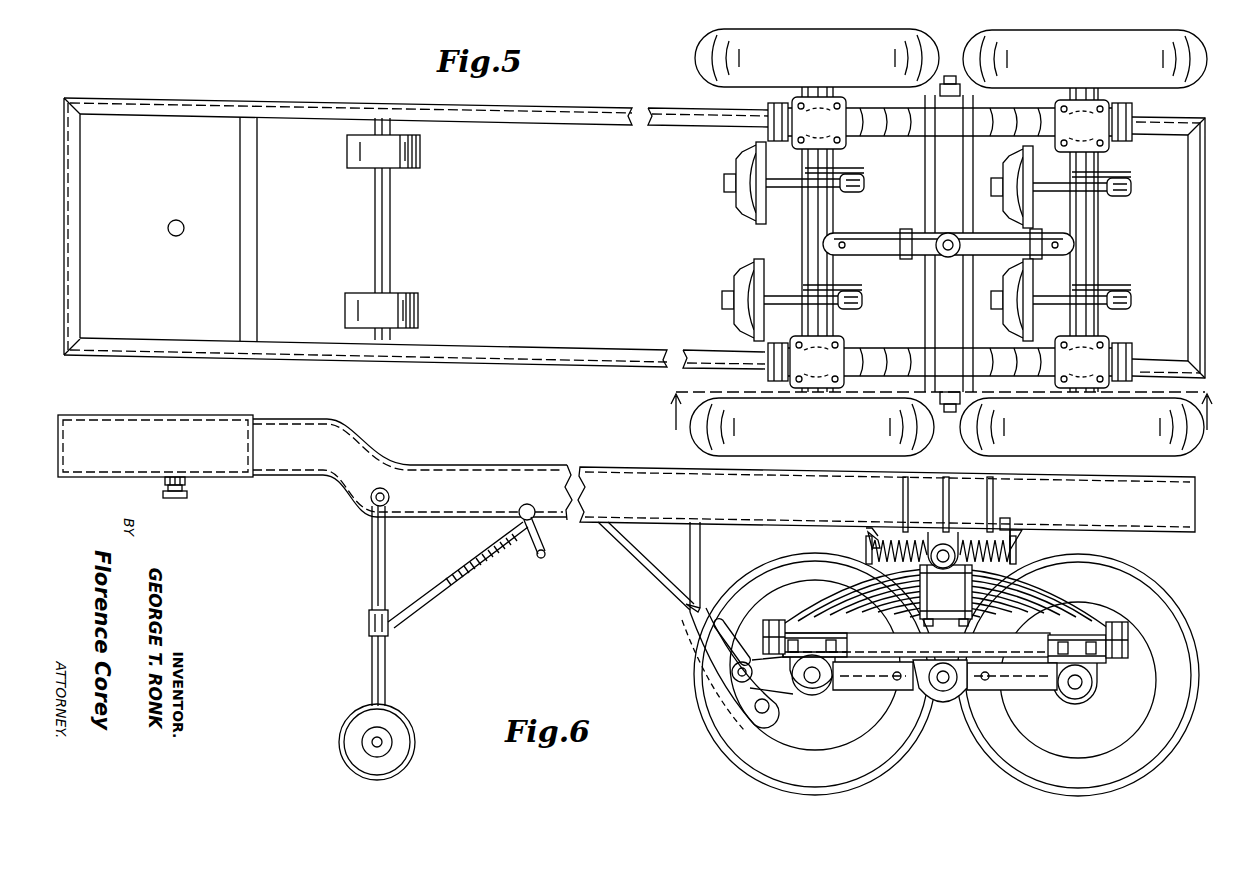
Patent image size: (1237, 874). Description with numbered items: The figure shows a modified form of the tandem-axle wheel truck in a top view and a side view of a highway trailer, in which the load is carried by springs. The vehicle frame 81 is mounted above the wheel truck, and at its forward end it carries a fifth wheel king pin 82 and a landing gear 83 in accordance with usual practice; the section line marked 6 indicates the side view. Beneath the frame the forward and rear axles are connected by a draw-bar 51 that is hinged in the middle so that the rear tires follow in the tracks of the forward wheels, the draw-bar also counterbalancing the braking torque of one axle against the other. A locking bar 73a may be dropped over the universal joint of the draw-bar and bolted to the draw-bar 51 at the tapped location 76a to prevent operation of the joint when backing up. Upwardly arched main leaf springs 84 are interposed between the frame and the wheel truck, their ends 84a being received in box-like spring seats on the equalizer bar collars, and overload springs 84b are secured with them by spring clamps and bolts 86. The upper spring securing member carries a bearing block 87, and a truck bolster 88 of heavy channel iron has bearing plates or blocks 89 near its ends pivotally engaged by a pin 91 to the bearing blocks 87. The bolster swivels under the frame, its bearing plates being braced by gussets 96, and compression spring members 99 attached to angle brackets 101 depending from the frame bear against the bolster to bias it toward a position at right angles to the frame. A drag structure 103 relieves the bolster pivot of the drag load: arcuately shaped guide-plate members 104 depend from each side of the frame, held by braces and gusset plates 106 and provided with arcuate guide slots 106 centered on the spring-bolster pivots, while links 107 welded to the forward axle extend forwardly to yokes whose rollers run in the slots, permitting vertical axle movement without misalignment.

In FIG. 5, the section line 6- 6 is at (938, 418).
In FIG. 5, the draw-bar 51 is at (886, 236).
In FIG. 5, the locking bar 73a is at (940, 262).
In FIG. 5, the tapped hole in draw-bar 76a is at (884, 264).
In FIG. 5, the vehicle frame 81 is at (529, 351).
In FIG. 6, the vehicle frame 81 is at (517, 478).
In FIG. 6, the fifth wheel king pin 82 is at (188, 497).
In FIG. 6, the landing gear 83 is at (372, 688).
In FIG. 6, the leaf springs 84 is at (985, 598).
In FIG. 6, the ends of leaf springs 84a is at (1128, 641).
In FIG. 6, the overload springs 84b is at (1042, 616).
In FIG. 6, the spring clamps and bolts 86 is at (975, 578).
In FIG. 6, the bearing block 87 is at (905, 566).
In FIG. 6, the truck bolster 88 is at (990, 528).
In FIG. 6, the bearing plates or blocks 89 is at (956, 546).
In FIG. 6, the pin 91 is at (942, 548).
In FIG. 6, the gussets 96 is at (903, 500).
In FIG. 6, the compression spring members 99 is at (1012, 543).
In FIG. 6, the angle brackets 101 is at (866, 543).
In FIG. 6, the drag structure 103 is at (705, 612).
In FIG. 6, the guide-plate members 104 is at (713, 630).
In FIG. 6, the braces and gusset plates / arcuate guide slots 106 is at (652, 568).
In FIG. 6, the links 107 is at (752, 700).